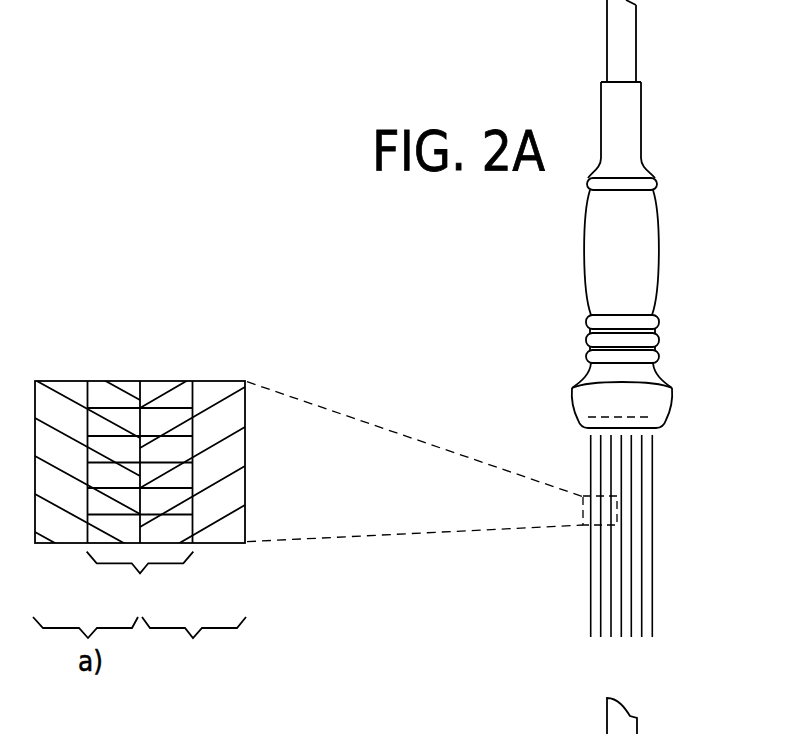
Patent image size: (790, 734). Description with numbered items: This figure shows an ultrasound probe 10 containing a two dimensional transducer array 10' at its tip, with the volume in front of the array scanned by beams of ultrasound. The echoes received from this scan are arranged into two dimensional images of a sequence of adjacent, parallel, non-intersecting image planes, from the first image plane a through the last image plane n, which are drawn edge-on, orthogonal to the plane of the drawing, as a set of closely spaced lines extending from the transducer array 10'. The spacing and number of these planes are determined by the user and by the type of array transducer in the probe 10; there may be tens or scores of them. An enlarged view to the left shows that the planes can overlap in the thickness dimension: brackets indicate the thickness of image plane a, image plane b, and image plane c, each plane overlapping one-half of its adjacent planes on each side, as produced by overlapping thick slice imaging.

The ultrasound probe 10 is at (646, 235).
The transducer array 10' is at (659, 409).
The image plane a) a is at (590, 595).
The image plane b) b is at (140, 581).
The image plane c) c is at (194, 647).
The image plane n) n is at (652, 595).